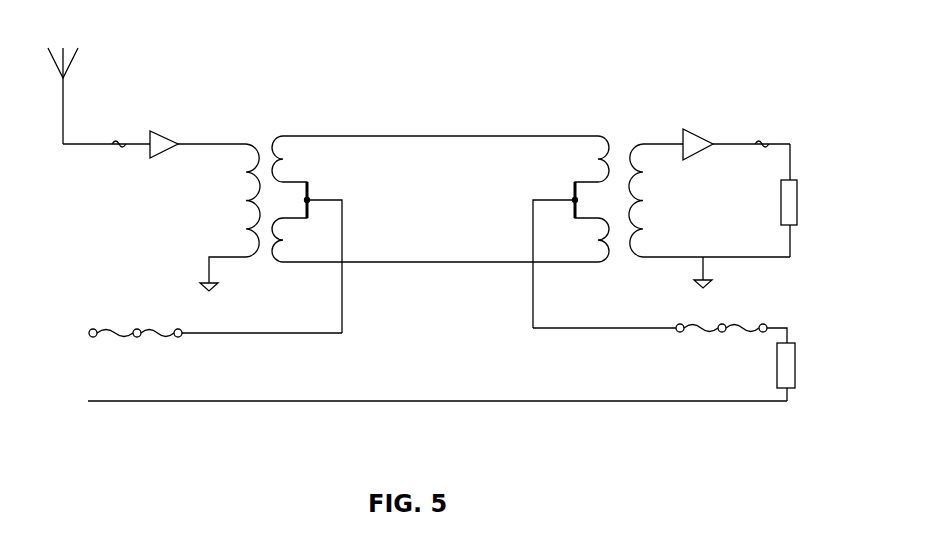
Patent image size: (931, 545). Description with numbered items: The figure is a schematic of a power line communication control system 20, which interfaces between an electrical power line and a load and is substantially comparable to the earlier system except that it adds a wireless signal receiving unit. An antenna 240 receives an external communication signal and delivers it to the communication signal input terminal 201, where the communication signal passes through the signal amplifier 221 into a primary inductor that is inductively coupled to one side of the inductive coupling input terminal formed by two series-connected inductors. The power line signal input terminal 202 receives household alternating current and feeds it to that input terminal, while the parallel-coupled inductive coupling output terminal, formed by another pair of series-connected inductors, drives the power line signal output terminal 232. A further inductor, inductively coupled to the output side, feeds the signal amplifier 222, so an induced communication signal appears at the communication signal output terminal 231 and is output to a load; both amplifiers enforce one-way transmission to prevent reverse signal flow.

The power line communication control system 20 is at (471, 58).
The communication signal input terminal 201 is at (88, 138).
The power line signal input terminal 202 is at (416, 350).
The signal amplifier 221 is at (196, 134).
The signal amplifier 222 is at (736, 132).
The communication signal output terminal 231 is at (811, 200).
The power line signal output terminal 232 is at (684, 362).
The antenna 240 is at (59, 84).